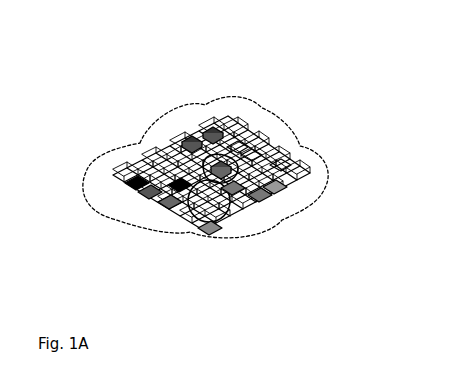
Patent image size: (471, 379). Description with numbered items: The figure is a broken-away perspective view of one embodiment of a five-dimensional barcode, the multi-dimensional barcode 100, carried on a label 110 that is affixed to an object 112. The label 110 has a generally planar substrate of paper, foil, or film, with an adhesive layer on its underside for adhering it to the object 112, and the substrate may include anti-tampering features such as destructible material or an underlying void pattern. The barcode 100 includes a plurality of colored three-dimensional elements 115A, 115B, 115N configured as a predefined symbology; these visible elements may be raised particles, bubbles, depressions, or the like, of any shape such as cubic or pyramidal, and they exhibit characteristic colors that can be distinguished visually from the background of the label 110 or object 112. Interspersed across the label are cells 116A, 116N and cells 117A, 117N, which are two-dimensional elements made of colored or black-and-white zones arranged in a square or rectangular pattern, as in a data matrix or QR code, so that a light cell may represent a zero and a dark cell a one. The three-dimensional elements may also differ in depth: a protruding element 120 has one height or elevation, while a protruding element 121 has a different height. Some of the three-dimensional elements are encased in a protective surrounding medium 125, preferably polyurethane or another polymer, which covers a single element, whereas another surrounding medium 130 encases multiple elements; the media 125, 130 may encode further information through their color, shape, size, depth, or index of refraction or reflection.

The multi-dimensional barcode 100 is at (50, 2).
The label 110 is at (146, 159).
The object 112 is at (106, 207).
The colored three-dimensional element 115A is at (192, 139).
The colored three-dimensional element 115B is at (212, 131).
The colored three-dimensional element 115N is at (276, 162).
The cell 116A is at (257, 204).
The cell 116N is at (282, 192).
The cell 117A is at (179, 208).
The cell 117N is at (186, 214).
The protruding three-dimensional element 120 is at (233, 145).
The protruding three-dimensional element 121 is at (247, 153).
The surrounding medium 125 is at (229, 181).
The surrounding medium 130 is at (195, 218).